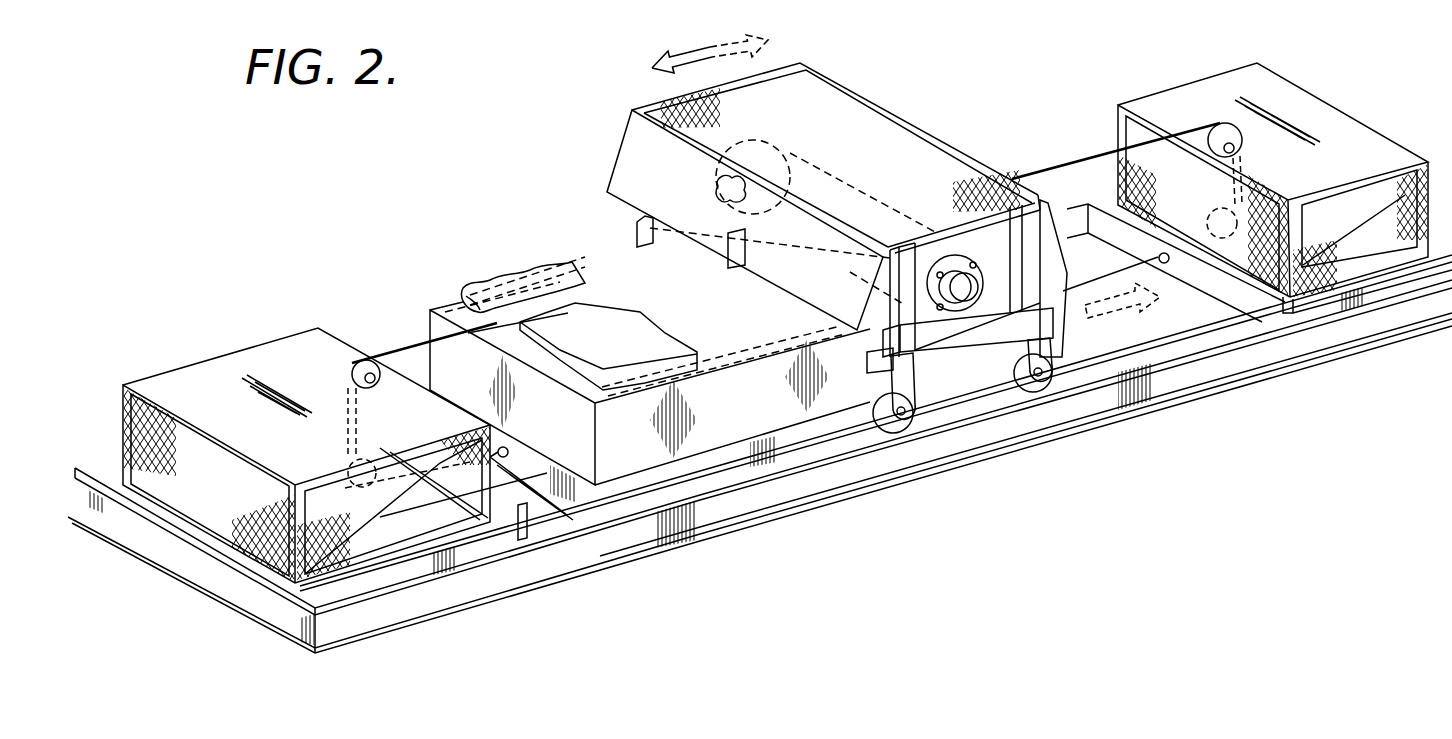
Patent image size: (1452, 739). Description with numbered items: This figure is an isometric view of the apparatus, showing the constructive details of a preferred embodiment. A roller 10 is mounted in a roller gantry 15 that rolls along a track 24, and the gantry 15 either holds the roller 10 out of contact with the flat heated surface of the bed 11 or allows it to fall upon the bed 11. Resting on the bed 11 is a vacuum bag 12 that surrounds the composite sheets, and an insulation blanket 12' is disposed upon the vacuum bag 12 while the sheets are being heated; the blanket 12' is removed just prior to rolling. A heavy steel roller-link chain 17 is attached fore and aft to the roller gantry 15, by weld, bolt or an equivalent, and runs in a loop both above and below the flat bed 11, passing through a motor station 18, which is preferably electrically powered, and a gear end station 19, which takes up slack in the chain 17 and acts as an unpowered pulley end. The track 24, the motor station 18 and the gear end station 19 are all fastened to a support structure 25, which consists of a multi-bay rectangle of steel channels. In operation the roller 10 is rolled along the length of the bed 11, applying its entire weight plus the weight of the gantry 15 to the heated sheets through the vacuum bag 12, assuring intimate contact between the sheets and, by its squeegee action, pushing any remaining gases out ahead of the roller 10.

The roller 10 is at (715, 188).
The flat bed 11 is at (793, 417).
The vacuum bag 12 is at (645, 303).
The insulation blanket 12' is at (523, 272).
The roller gantry 15 is at (623, 140).
The roller-link chain 17 is at (400, 350).
The motor station 18 is at (122, 400).
The gear end station 19 is at (1187, 84).
The track 24 is at (567, 520).
The support structure 25 is at (1188, 398).